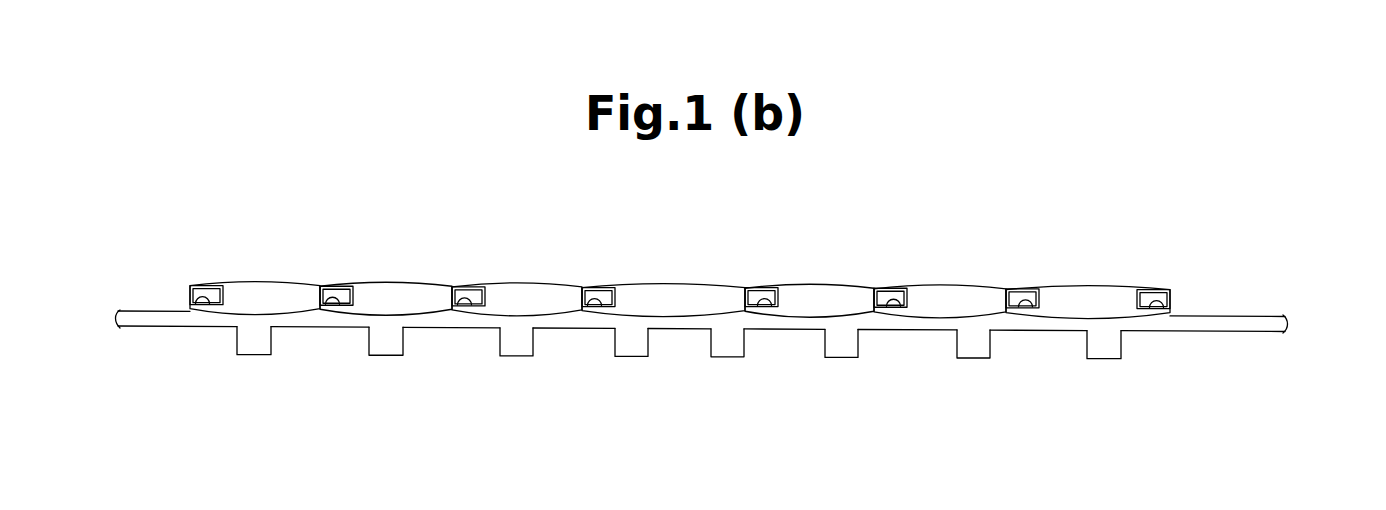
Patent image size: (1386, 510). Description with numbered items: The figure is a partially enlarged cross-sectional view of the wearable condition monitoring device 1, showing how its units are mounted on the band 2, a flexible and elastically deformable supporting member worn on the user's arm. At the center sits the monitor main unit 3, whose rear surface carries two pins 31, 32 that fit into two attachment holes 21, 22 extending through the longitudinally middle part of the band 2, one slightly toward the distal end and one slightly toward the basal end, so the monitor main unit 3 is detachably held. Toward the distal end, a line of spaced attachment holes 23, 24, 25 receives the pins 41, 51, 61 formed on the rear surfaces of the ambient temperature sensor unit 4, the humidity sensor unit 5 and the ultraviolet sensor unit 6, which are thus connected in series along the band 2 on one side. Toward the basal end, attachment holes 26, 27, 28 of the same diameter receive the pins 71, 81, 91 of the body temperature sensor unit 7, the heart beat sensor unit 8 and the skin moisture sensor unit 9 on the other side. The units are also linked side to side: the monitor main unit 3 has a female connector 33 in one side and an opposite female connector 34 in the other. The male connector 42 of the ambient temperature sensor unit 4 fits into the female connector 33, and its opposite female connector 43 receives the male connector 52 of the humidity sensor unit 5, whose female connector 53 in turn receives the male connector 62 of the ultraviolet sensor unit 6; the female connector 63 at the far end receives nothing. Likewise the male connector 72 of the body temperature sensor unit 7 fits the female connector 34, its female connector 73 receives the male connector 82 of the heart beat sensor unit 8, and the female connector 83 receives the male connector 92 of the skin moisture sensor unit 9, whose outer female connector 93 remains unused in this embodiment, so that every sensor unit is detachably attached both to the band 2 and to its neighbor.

The condition monitoring device 1 is at (751, 198).
The band 2 is at (1212, 320).
The monitor main unit 3 is at (687, 287).
The ambient temperature sensor unit 4 is at (813, 287).
The humidity sensor unit 5 is at (941, 287).
The ultraviolet sensor unit 6 is at (1073, 287).
The body temperature sensor unit 7 is at (551, 287).
The heart beat sensor unit 8 is at (421, 287).
The skin moisture sensor unit 9 is at (288, 287).
The attachment hole 21 is at (743, 318).
The attachment hole 22 is at (647, 318).
The attachment hole 23 is at (857, 318).
The attachment hole 24 is at (989, 318).
The attachment hole 25 is at (1120, 318).
The attachment hole 26 is at (532, 318).
The attachment hole 27 is at (401, 318).
The attachment hole 28 is at (269, 318).
The pin 31 is at (721, 343).
The pin 32 is at (625, 343).
The female connector 33 is at (759, 304).
The female connector 34 is at (601, 303).
The pin 41 is at (835, 343).
The male connector 42 is at (760, 291).
The female connector 43 is at (888, 304).
The pin 51 is at (967, 343).
The male connector 52 is at (892, 291).
The female connector 53 is at (1020, 304).
The pin 61 is at (1097, 343).
The male connector 62 is at (1025, 291).
The female connector 63 is at (1151, 304).
The pin 71 is at (510, 343).
The male connector 72 is at (597, 291).
The female connector 73 is at (471, 303).
The pin 81 is at (379, 343).
The male connector 82 is at (467, 291).
The female connector 83 is at (339, 303).
The pin 91 is at (247, 343).
The male connector 92 is at (337, 291).
The female connector 93 is at (209, 303).